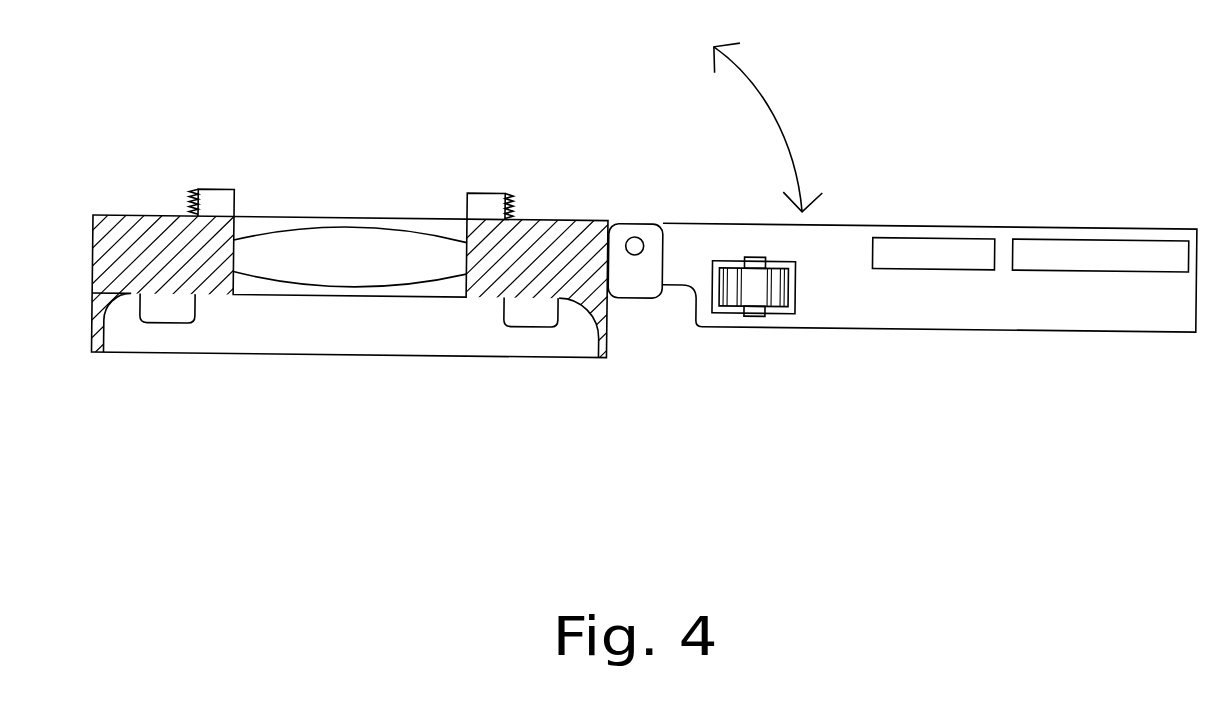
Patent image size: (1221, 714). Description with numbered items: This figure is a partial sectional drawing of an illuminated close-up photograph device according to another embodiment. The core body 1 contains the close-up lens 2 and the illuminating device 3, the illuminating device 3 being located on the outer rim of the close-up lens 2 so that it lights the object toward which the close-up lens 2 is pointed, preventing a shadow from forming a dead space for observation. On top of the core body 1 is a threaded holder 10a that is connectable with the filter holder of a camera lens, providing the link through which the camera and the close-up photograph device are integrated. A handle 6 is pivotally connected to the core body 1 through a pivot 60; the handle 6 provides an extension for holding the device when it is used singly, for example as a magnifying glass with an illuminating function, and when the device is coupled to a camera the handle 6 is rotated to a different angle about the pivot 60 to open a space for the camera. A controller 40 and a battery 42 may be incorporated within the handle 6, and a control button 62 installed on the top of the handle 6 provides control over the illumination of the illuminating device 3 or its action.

The core body 1 is at (122, 237).
The threaded holder 10a is at (218, 195).
The close-up lens 2 is at (360, 247).
The illuminating device 3 is at (170, 302).
The pivot 60 is at (635, 240).
The handle 6 is at (1030, 290).
The control button 62 is at (797, 280).
The controller 40 is at (913, 241).
The battery 42 is at (1078, 241).